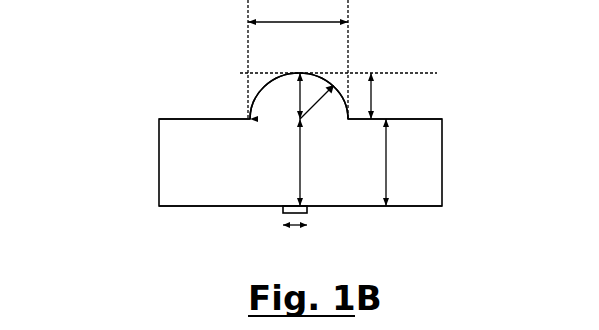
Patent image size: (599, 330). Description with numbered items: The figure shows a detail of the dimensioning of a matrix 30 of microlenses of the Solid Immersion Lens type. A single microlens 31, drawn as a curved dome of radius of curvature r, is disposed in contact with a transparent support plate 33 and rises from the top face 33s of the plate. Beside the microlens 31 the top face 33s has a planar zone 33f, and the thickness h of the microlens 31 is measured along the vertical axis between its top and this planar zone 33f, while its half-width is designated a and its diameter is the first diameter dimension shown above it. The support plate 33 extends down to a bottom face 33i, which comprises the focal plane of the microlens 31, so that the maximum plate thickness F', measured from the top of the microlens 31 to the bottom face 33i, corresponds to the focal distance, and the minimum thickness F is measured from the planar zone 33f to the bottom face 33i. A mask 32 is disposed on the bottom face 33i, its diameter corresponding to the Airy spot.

The matrix of microlenses 30 is at (127, 98).
The microlens 31 is at (270, 70).
The mask 32 is at (313, 213).
The transparent support plate 33 is at (159, 125).
The top face of the support plate 33s is at (257, 98).
The planar zone of the top face 33f is at (440, 118).
The bottom face of the support plate 33i is at (427, 207).